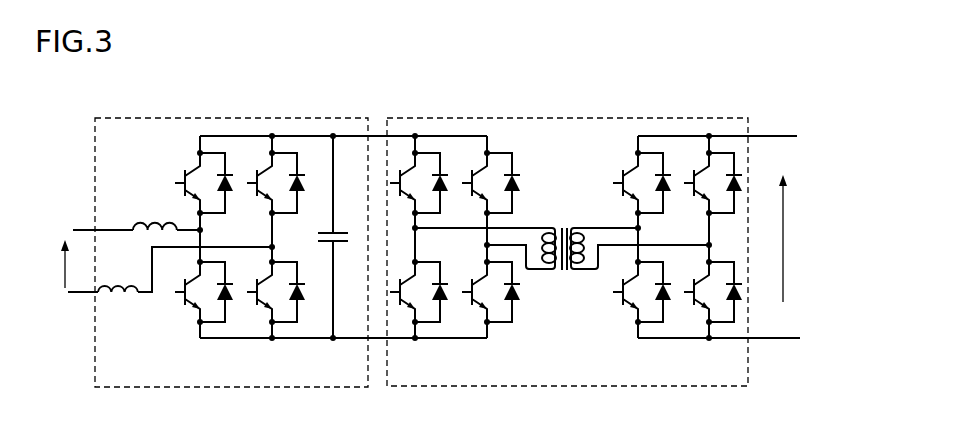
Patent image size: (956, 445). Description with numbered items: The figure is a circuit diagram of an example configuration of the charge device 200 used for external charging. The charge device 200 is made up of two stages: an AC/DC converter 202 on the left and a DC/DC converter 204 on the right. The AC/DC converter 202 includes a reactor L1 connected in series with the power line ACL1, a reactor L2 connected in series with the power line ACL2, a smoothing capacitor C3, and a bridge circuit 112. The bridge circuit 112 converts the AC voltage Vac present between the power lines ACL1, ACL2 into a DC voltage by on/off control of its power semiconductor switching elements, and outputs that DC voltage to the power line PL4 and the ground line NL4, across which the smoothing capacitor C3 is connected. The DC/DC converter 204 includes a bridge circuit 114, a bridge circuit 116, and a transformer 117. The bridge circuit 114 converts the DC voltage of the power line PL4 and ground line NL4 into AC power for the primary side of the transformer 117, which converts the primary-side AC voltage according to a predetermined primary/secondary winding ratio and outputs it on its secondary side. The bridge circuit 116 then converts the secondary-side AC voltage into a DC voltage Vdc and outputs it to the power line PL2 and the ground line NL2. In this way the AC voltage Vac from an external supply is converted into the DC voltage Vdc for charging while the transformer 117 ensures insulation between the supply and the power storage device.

The charge device 200 is at (688, 81).
The AC/DC converter 202 is at (228, 117).
The DC/DC converter 204 is at (522, 117).
The bridge circuit 112 is at (273, 347).
The bridge circuit 114 is at (487, 347).
The bridge circuit 116 is at (709, 347).
The transformer 117 is at (566, 288).
The smoothing capacitor C3 is at (340, 228).
The reactor L1 is at (143, 219).
The reactor L2 is at (134, 300).
The power line PL4 is at (377, 117).
The ground line NL4 is at (378, 340).
The power line PL2 is at (759, 134).
The ground line NL2 is at (763, 340).
The power line ACL1 is at (81, 222).
The power line ACL2 is at (81, 300).
The AC voltage Vac is at (48, 264).
The DC voltage Vdc is at (784, 249).